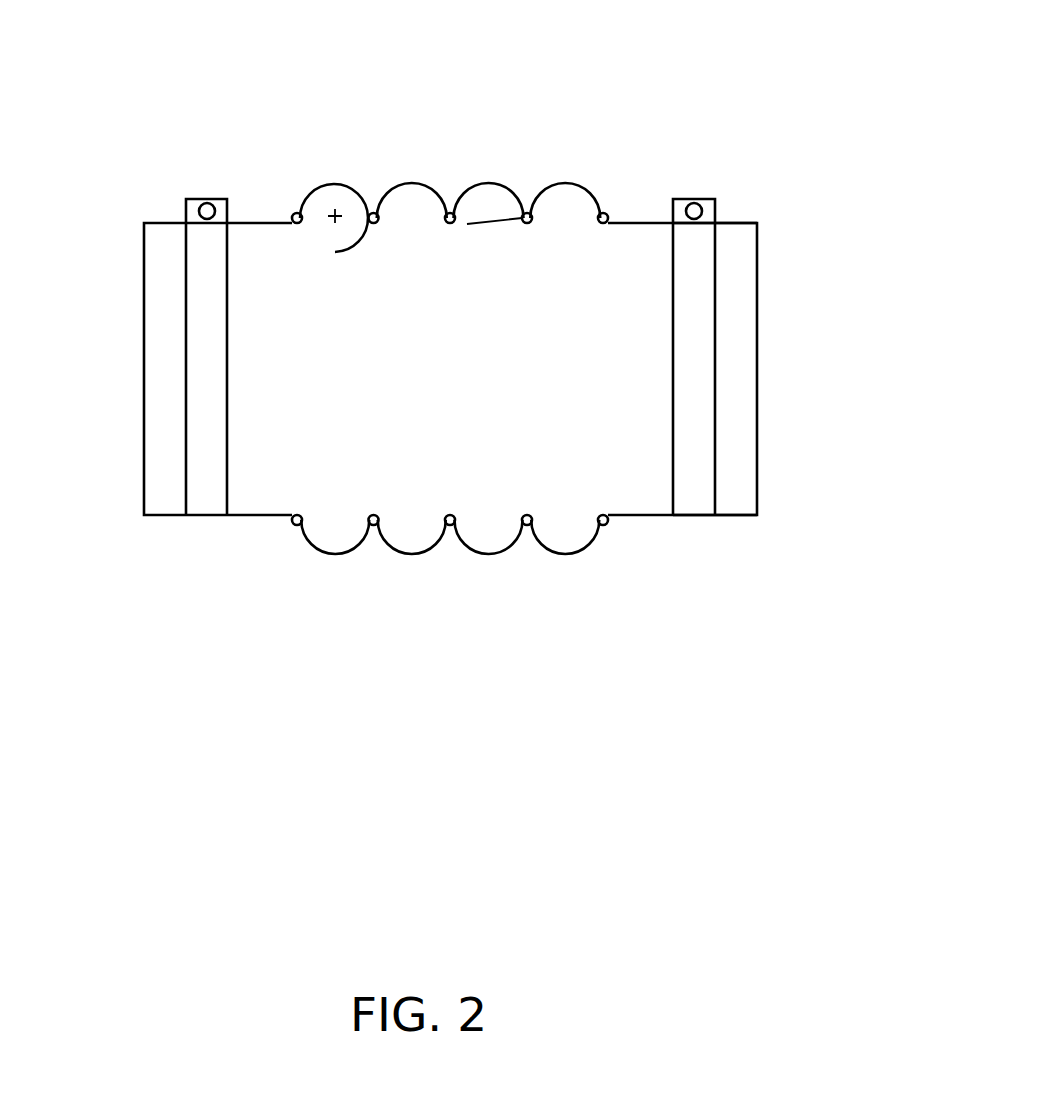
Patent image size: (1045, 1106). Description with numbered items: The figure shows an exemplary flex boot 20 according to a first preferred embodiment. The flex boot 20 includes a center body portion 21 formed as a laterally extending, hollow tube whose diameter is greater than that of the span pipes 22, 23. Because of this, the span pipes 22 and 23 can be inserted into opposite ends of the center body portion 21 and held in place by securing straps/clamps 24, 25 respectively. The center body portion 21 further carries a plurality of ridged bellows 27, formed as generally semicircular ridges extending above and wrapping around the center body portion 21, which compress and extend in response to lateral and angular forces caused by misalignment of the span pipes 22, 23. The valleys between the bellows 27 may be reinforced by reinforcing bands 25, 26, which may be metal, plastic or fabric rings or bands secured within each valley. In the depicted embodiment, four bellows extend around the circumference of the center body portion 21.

The flex boot 20 is at (620, 527).
The center body portion 21 is at (487, 413).
The span pipe 22 is at (157, 358).
The span pipe 23 is at (737, 322).
The securing strap/clamp 24 is at (208, 262).
The securing strap/clamp 25 is at (692, 483).
The reinforcing band 26 is at (297, 522).
The ridged bellows 27 is at (322, 549).